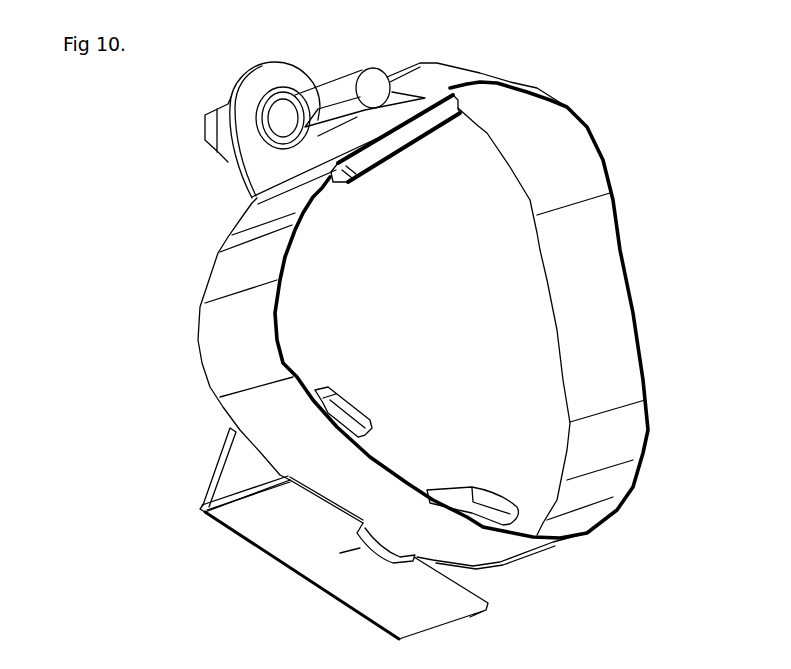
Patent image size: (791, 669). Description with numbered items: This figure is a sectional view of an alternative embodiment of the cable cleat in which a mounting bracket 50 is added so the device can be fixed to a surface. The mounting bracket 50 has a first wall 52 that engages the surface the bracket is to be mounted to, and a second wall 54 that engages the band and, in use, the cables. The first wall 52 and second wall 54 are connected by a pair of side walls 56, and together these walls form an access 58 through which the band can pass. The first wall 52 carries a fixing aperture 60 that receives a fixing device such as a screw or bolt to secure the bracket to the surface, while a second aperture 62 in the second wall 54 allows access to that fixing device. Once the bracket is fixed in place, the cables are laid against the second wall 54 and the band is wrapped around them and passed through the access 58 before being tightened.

The mounting bracket 50 is at (163, 467).
The first wall 52 is at (268, 517).
The second wall 54 is at (352, 411).
The side walls 56 is at (233, 482).
The access 58 is at (203, 433).
The fixing aperture 60 is at (363, 552).
The second aperture 62 is at (442, 493).